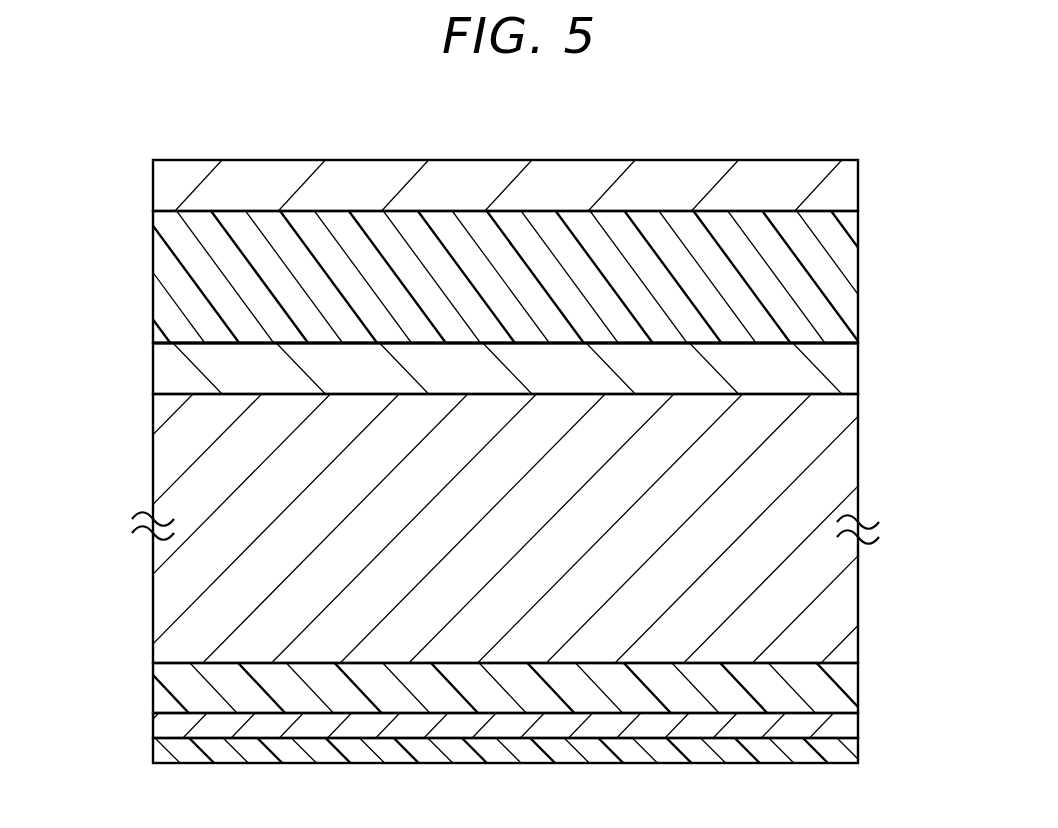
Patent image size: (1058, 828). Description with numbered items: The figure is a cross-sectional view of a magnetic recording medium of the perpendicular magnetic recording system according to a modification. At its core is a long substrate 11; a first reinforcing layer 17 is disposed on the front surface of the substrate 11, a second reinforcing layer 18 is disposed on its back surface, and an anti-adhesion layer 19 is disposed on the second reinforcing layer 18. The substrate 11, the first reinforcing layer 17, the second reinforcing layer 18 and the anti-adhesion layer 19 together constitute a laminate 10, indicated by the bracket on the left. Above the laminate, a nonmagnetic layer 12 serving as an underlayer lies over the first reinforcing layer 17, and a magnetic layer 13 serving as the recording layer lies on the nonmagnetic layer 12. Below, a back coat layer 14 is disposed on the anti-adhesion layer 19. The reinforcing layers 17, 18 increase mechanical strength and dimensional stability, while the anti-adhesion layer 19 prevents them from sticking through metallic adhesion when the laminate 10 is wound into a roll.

The laminate 10 is at (529, 538).
The substrate 11 is at (848, 475).
The nonmagnetic layer 12 is at (847, 285).
The magnetic layer 13 is at (847, 190).
The back coat layer 14 is at (847, 750).
The first reinforcing layer 17 is at (847, 371).
The second reinforcing layer 18 is at (847, 686).
The anti-adhesion layer 19 is at (847, 729).